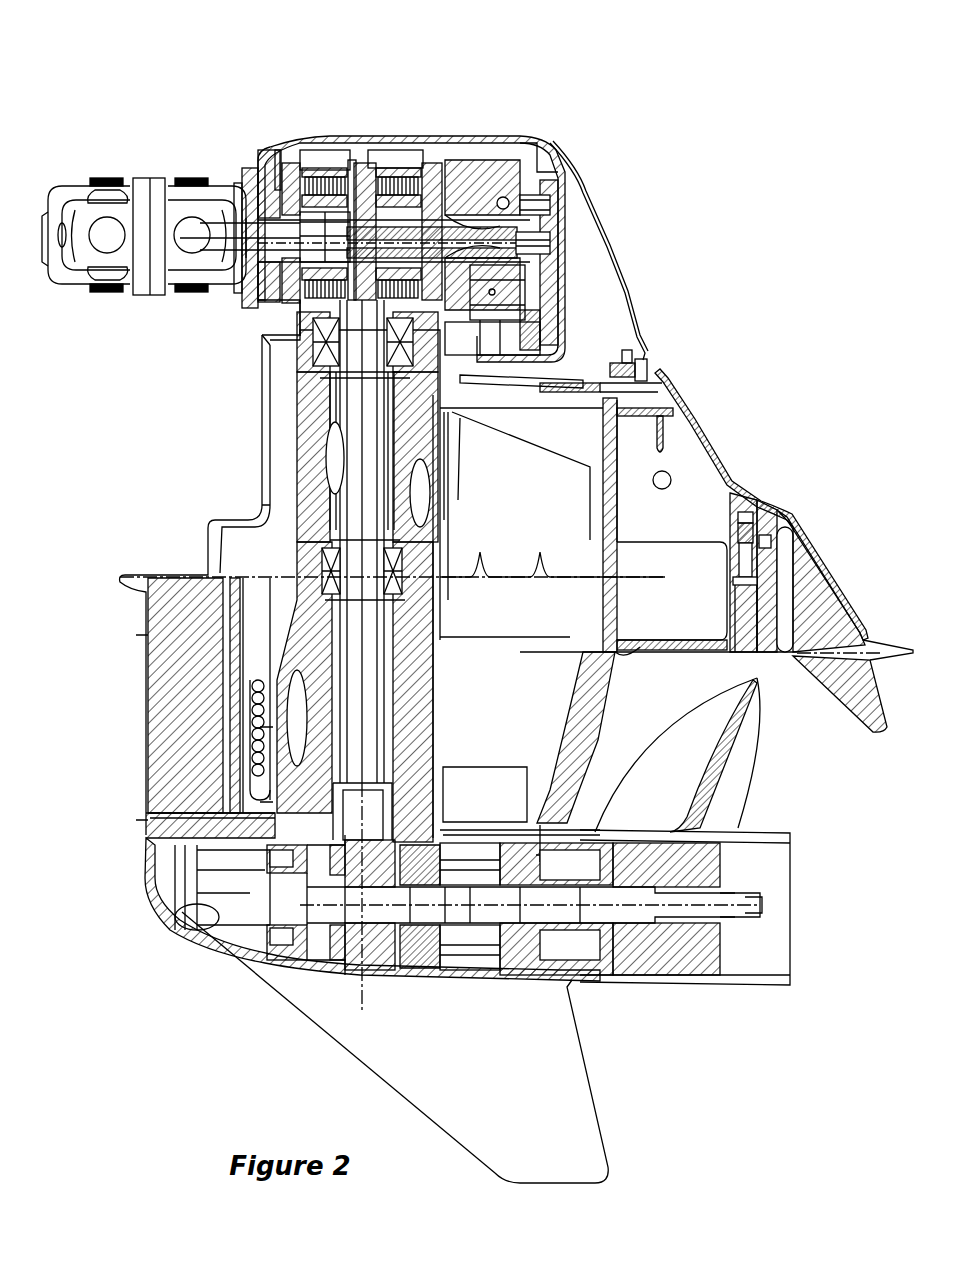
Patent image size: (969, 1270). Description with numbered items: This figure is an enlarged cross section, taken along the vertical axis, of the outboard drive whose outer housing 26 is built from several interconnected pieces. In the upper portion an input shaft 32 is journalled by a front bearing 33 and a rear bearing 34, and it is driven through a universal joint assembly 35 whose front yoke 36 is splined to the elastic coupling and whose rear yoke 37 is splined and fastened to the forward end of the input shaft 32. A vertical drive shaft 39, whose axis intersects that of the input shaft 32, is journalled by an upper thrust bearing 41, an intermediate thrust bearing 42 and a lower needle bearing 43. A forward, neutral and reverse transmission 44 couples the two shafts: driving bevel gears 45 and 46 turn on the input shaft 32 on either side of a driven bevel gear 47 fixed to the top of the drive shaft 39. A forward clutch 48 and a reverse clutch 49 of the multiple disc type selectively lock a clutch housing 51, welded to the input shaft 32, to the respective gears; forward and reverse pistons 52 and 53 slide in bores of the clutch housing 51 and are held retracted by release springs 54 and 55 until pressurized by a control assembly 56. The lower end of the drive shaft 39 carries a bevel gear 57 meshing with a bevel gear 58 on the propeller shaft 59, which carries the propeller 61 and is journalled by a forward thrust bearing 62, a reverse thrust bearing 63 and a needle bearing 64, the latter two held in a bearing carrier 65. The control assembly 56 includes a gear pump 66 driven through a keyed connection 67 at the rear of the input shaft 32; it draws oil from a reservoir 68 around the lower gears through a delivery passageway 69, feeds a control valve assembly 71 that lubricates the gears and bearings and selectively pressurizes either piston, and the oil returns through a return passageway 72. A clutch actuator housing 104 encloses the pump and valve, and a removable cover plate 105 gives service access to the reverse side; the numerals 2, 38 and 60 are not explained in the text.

The clutch dog 2 is at (310, 152).
The outer housing 26 is at (618, 253).
The input shaft 32 is at (240, 300).
The front bearing 33 is at (244, 215).
The rear bearing 34 is at (540, 166).
The universal joint assembly 35 is at (128, 168).
The front yoke 36 is at (64, 284).
The rear yoke 37 is at (180, 288).
The yoke 38 is at (226, 197).
The drive shaft 39 is at (347, 407).
The thrust bearing 41 is at (323, 357).
The thrust bearing 42 is at (418, 582).
The needle bearing 43 is at (253, 802).
The forward, neutral and reverse transmission 44 is at (332, 168).
The driving bevel gear 45 is at (300, 170).
The driving bevel gear 46 is at (436, 152).
The driven bevel gear 47 is at (298, 318).
The forward multiple disc clutch 48 is at (298, 150).
The reverse multiple disc clutch 49 is at (396, 170).
The clutch housing 51 is at (368, 150).
The forward clutch actuating piston 52 is at (349, 150).
The reverse clutch actuating piston 53 is at (388, 150).
The release spring 54 is at (262, 168).
The release spring 55 is at (427, 168).
The control assembly 56 is at (537, 168).
The bevel gear 57 is at (175, 915).
The bevel gear 58 is at (300, 975).
The propeller shaft 59 is at (370, 962).
The seal 60 is at (286, 172).
The propeller 61 is at (737, 792).
The forward thrust bearing 62 is at (217, 937).
The reverse thrust bearing 63 is at (427, 977).
The needle bearing 64 is at (497, 962).
The bearing carrier 65 is at (450, 863).
The pressure pump 66 is at (542, 207).
The keyed connection 67 is at (532, 243).
The reservoir 68 is at (290, 878).
The delivery passageway 69 is at (428, 692).
The control valve assembly 71 is at (520, 287).
The return passageway 72 is at (280, 730).
The clutch actuator housing 104 is at (575, 338).
The removable cover plate 105 is at (555, 165).